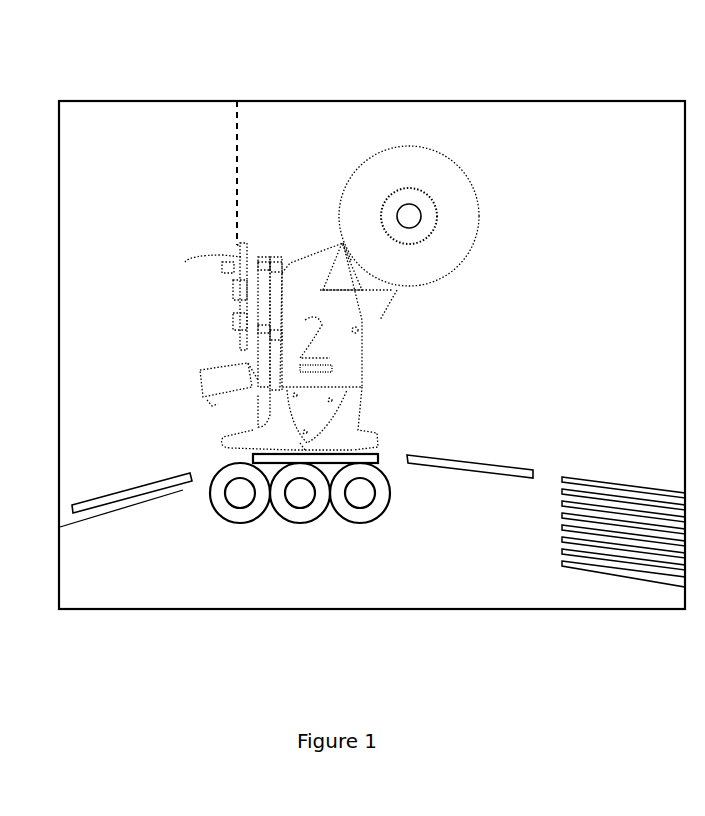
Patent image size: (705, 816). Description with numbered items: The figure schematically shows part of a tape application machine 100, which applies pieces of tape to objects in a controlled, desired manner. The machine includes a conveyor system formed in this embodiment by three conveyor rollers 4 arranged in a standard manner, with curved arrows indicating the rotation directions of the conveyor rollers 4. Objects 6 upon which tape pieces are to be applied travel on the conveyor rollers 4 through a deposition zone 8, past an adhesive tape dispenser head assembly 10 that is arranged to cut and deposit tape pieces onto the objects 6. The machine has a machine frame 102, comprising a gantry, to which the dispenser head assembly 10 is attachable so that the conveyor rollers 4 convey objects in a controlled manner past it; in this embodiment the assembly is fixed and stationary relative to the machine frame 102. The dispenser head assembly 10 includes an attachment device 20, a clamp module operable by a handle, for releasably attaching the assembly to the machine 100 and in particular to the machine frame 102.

The tape application machine 100 is at (548, 100).
The machine frame 102 is at (242, 140).
The adhesive tape dispenser head assembly 10 is at (415, 313).
The attachment device 20 is at (183, 266).
The deposition zone 8 is at (305, 457).
The objects 6 is at (91, 505).
The conveyor rollers 4 is at (240, 500).